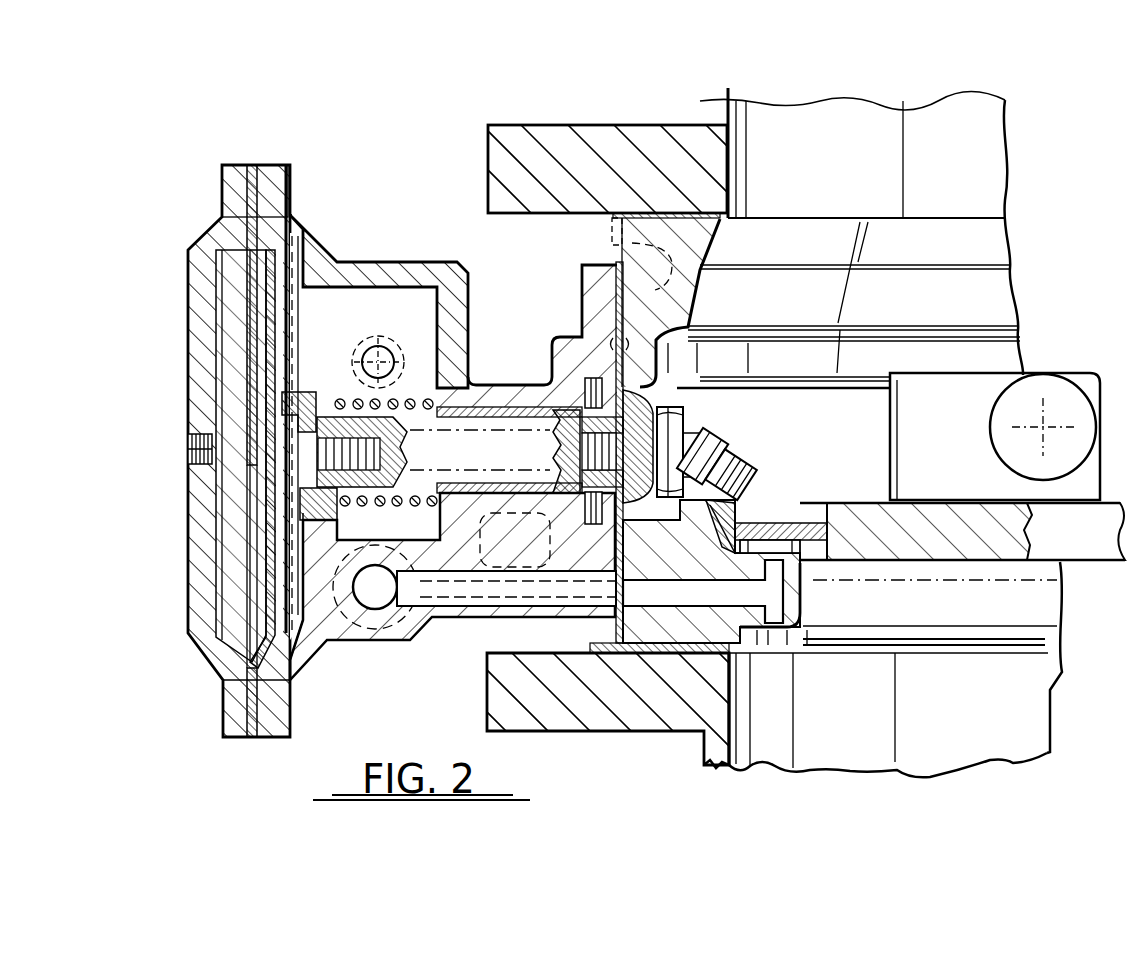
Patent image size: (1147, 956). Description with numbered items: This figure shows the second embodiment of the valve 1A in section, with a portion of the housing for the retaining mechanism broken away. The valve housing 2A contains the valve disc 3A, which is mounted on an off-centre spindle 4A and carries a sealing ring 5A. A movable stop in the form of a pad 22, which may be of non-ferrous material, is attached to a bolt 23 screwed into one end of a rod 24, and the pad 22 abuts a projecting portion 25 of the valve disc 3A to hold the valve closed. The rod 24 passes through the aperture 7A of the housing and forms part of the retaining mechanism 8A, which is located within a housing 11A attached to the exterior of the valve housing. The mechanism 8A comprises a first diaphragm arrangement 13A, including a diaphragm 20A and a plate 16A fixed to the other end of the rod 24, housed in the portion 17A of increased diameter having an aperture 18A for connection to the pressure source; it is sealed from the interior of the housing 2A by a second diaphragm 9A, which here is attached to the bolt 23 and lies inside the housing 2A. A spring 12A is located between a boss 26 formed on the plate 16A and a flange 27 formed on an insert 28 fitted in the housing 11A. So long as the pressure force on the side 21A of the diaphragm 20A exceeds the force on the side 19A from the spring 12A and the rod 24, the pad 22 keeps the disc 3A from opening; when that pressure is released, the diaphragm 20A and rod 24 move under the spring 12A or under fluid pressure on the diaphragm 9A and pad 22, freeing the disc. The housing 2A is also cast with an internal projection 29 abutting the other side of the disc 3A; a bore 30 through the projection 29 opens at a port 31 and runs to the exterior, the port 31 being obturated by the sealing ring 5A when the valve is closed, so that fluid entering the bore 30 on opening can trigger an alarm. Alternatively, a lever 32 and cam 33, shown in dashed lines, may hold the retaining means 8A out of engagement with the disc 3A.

The stationary housing 1A is at (600, 122).
The valve housing 2A is at (560, 687).
The valve disc 3A is at (910, 552).
The off-centre spindle 4A is at (1060, 397).
The sealing ring 5A is at (807, 503).
The aperture 7A is at (713, 615).
The retaining mechanism 8A is at (185, 655).
The second diaphragm 9A is at (623, 380).
The housing for retaining mechanism 11A is at (430, 262).
The spring 12A is at (365, 397).
The first diaphragm arrangement 13A is at (255, 593).
The plate 16A is at (295, 612).
The portion of housing of increased diameter 17A is at (232, 699).
The aperture 18A is at (188, 455).
The side of diaphragm 19A is at (297, 503).
The diaphragm 20A is at (290, 433).
The side of diaphragm 21A is at (266, 560).
The pad 22 is at (700, 482).
The bolt 23 is at (703, 440).
The rod 24 is at (530, 461).
The projecting portion 25 is at (753, 455).
The boss 26 is at (357, 573).
The flange 27 is at (468, 370).
The insert 28 is at (490, 407).
The internal projection 29 is at (785, 595).
The bore 30 is at (650, 590).
The port 31 is at (804, 578).
The lever 32 is at (418, 340).
The cam 33 is at (348, 370).